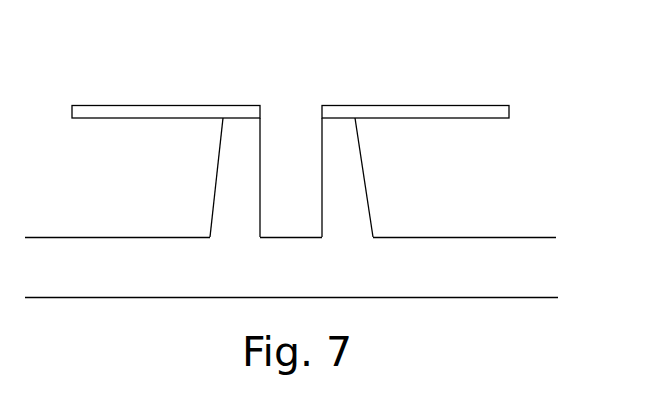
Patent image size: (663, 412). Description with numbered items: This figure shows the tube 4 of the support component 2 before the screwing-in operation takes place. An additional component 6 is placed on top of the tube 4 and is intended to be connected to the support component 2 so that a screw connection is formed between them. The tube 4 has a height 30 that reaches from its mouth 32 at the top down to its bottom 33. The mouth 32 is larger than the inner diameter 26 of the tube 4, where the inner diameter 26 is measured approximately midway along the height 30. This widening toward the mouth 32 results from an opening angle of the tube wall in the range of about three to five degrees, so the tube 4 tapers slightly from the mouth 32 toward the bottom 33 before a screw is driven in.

The support component 2 is at (541, 246).
The tube 4 is at (217, 170).
The additional component 6 is at (472, 98).
The inner diameter 26 is at (318, 173).
The height 30 is at (424, 120).
The mouth 32 is at (273, 118).
The bottom 33 is at (252, 239).